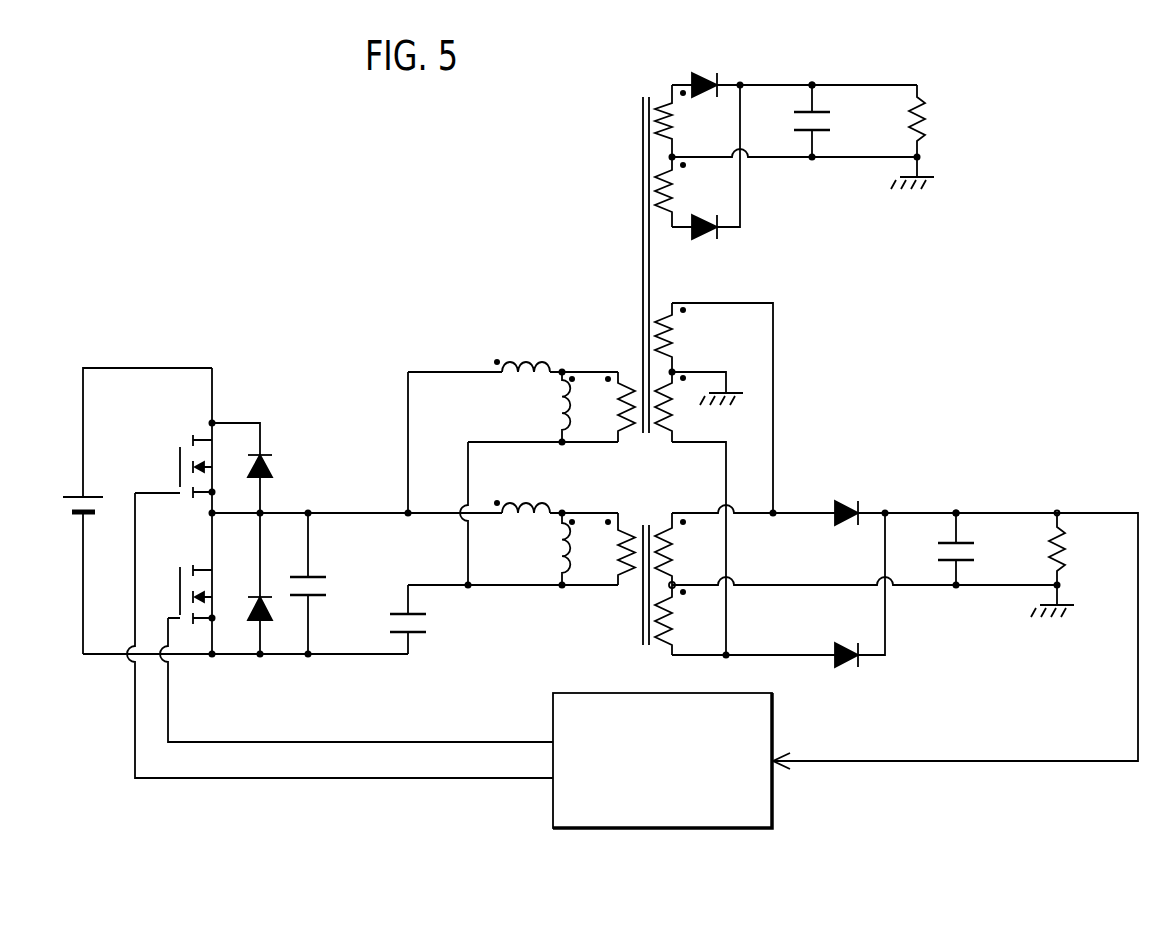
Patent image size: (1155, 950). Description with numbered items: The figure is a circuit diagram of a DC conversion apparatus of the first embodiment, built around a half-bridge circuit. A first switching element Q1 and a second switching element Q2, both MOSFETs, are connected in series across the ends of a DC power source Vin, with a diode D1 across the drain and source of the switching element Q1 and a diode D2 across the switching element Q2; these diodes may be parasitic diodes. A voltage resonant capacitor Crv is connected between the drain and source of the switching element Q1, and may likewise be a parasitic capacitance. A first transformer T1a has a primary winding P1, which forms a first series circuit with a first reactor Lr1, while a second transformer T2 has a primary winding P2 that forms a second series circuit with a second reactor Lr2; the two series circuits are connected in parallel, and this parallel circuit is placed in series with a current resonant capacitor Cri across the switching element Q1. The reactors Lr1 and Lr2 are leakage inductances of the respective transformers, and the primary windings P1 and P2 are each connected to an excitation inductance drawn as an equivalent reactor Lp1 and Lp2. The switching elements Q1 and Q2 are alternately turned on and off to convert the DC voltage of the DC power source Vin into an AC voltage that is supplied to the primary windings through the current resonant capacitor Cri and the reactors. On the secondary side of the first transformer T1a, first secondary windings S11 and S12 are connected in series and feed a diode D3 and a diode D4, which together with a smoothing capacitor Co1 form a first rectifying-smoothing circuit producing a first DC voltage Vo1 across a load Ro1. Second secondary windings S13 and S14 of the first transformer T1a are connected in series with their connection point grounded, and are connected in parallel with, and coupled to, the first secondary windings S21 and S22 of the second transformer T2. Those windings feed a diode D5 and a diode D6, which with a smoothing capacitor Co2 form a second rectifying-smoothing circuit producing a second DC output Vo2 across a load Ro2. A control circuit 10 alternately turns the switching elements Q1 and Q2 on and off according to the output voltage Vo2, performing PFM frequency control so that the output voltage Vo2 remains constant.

The DC power source Vin is at (137, 511).
The first switching element Q1 is at (184, 582).
The second switching element Q2 is at (184, 455).
The diode D1 is at (272, 583).
The diode D2 is at (254, 468).
The voltage resonant capacitor Crv is at (329, 583).
The current resonant capacitor Cri is at (427, 619).
The first reactor Lr1 is at (526, 351).
The equivalent reactor Lp1 is at (546, 407).
The primary winding P1 is at (612, 407).
The second reactor Lr2 is at (526, 493).
The equivalent reactor Lp2 is at (546, 549).
The primary winding P2 is at (612, 549).
The first transformer T1a is at (649, 248).
The first secondary winding S11 is at (686, 121).
The first secondary winding S12 is at (686, 192).
The second secondary winding S13 is at (687, 337).
The second secondary winding S14 is at (699, 407).
The diode D3 is at (705, 73).
The diode D4 is at (705, 241).
The smoothing capacitor Co1 is at (836, 121).
The load Ro1 is at (931, 137).
The first DC voltage Vo1 is at (812, 85).
The second transformer T2 is at (644, 566).
The first secondary winding S21 is at (687, 549).
The first secondary winding S22 is at (687, 620).
The diode D5 is at (848, 501).
The diode D6 is at (848, 669).
The smoothing capacitor Co2 is at (980, 549).
The load Ro2 is at (1073, 565).
The second DC output Vo2 is at (956, 513).
The control circuit 10 is at (772, 795).